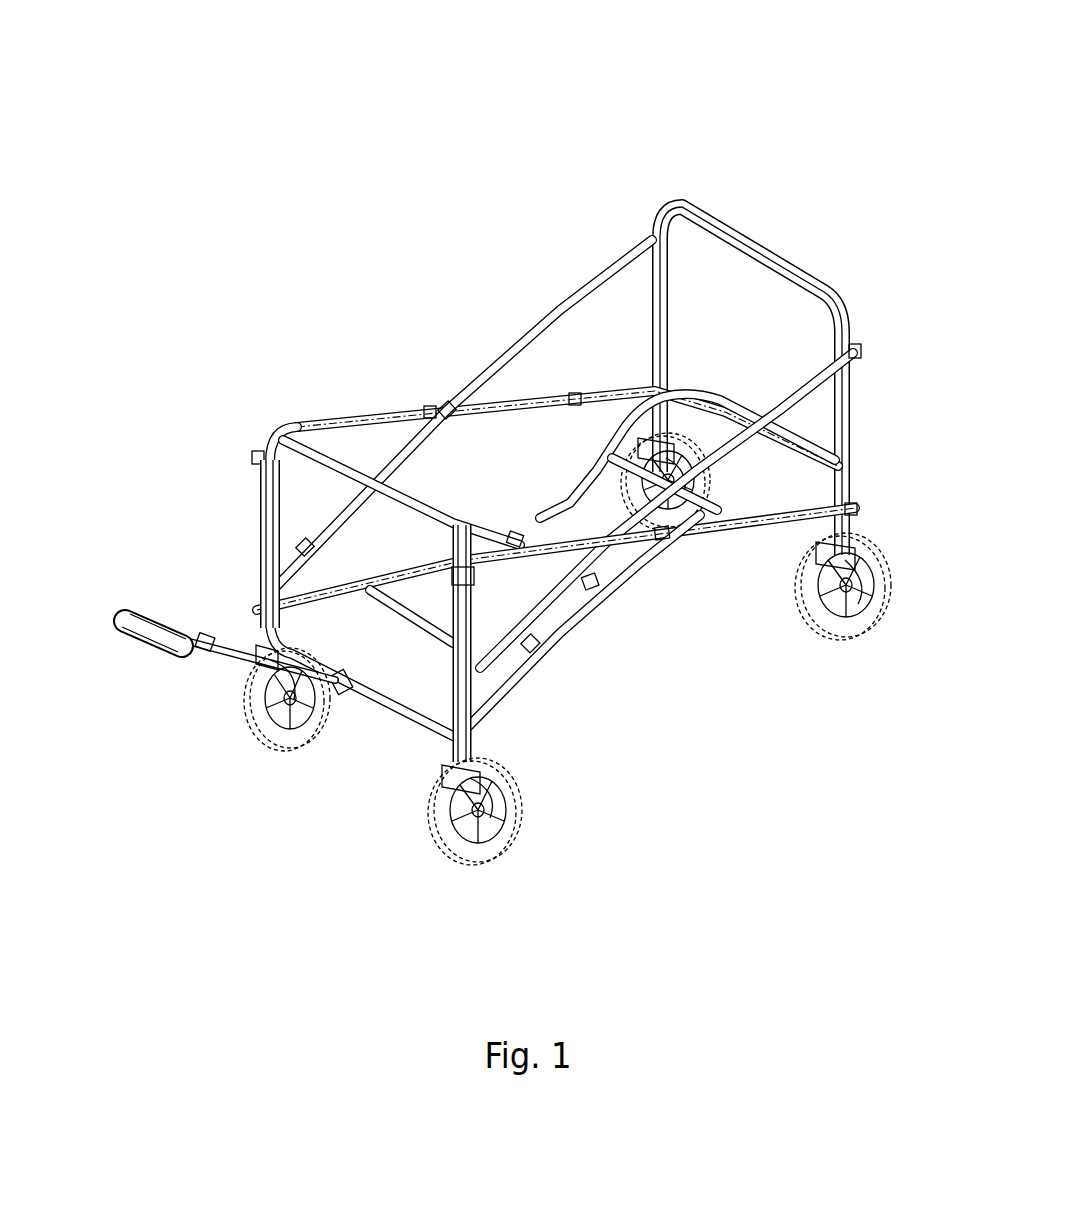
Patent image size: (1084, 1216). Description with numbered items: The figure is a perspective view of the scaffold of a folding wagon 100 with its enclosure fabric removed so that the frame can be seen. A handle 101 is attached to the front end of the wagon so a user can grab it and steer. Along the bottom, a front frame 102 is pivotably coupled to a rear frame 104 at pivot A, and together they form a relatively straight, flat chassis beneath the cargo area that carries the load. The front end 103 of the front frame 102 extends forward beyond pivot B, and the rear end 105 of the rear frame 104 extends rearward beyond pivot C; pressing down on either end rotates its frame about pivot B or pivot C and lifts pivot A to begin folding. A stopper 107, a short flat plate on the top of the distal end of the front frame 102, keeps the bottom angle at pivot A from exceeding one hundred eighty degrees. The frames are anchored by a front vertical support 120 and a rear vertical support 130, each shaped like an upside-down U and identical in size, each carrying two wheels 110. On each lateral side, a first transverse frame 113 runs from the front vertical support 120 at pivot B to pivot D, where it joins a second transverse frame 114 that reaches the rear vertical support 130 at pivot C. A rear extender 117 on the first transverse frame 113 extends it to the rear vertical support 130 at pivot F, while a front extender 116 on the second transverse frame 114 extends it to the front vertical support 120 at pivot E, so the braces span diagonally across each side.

The folding wagon 100 is at (737, 148).
The handle 101 is at (150, 625).
The front frame 102 is at (343, 590).
The front end 103 is at (397, 727).
The rear frame 104 is at (580, 513).
The rear end 105 is at (690, 388).
The stopper 107 is at (457, 413).
The wheel 110 is at (457, 847).
The first transverse frame 113 is at (303, 549).
The second transverse frame 114 is at (588, 400).
The front extender 116 is at (349, 433).
The rear extender 117 is at (628, 258).
The front vertical support 120 is at (390, 690).
The rear vertical support 130 is at (745, 240).
The pivot A is at (470, 570).
The pivot B is at (283, 623).
The pivot C is at (575, 400).
The pivot D is at (430, 413).
The pivot E is at (252, 457).
The pivot F is at (848, 352).